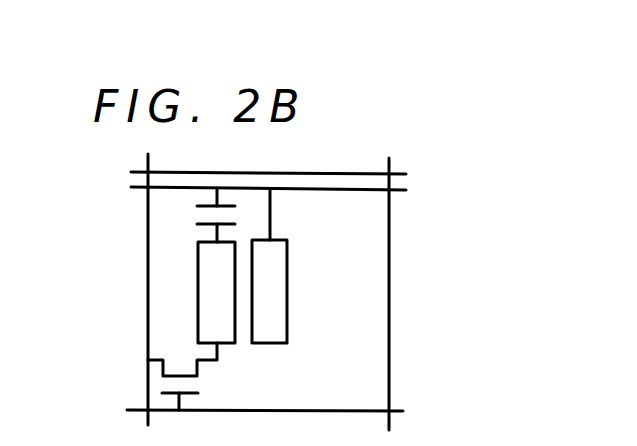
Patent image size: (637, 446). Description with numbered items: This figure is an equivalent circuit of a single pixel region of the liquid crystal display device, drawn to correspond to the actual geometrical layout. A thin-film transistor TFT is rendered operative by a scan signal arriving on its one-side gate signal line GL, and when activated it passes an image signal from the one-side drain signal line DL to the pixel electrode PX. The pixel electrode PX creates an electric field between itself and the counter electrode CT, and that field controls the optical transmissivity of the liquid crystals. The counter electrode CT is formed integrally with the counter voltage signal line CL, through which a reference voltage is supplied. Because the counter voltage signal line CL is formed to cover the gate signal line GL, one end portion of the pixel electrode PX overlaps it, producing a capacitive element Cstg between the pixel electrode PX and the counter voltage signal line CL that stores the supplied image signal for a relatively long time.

The drain signal line DL is at (148, 340).
The counter voltage signal line CL is at (355, 190).
The gate signal line GL is at (335, 411).
The capacitive element Cstg is at (182, 207).
The pixel electrode PX is at (197, 295).
The counter electrode CT is at (287, 279).
The thin-film transistor TFT is at (215, 382).